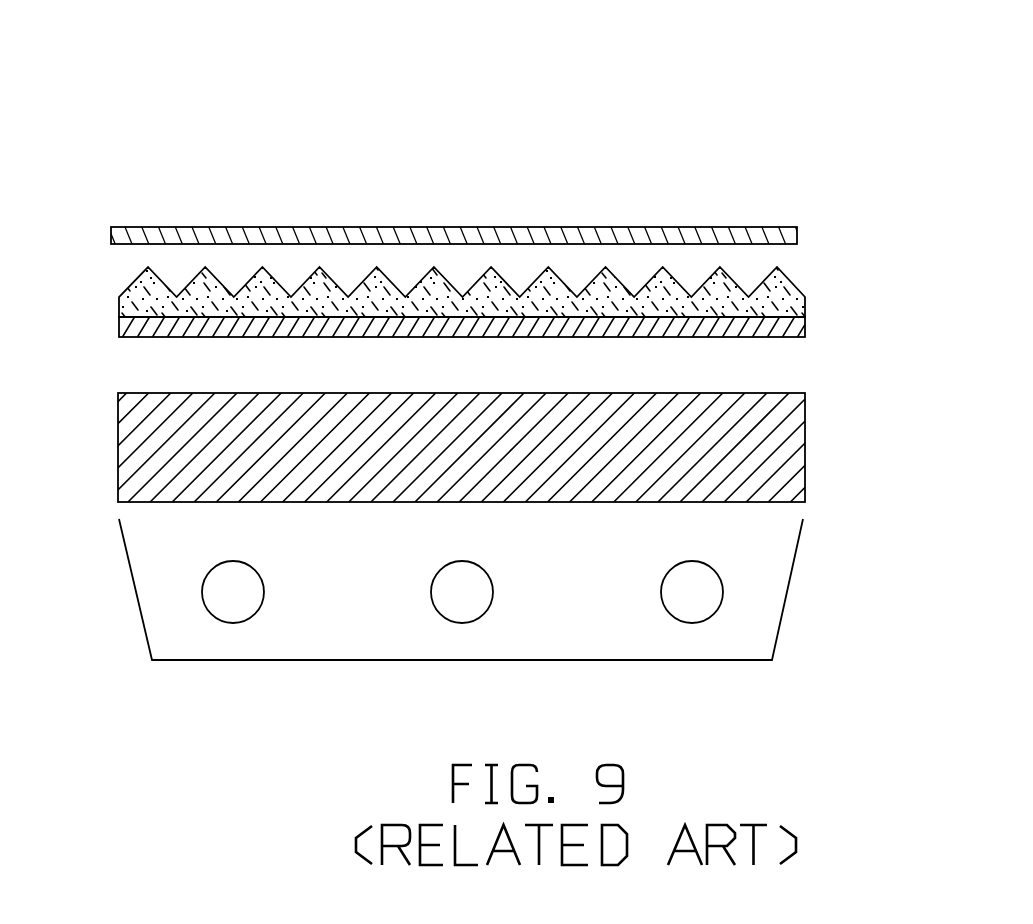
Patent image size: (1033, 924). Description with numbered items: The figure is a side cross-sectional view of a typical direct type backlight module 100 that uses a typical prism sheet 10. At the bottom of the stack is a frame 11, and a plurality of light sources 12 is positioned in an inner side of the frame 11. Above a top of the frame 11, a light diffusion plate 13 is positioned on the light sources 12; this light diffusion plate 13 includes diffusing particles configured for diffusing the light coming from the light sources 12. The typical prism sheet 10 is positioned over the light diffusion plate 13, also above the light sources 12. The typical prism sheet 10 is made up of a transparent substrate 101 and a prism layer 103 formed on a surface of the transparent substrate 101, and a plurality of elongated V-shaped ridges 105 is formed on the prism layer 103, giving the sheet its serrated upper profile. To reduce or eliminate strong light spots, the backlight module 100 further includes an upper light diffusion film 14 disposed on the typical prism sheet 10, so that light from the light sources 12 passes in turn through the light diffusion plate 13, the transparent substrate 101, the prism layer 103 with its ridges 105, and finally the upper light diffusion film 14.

The direct type backlight module 100 is at (379, 64).
The upper light diffusion film 14 is at (795, 235).
The typical prism sheet 10 is at (487, 300).
The prism layer 103 is at (466, 288).
The elongated V-shaped ridges 105 is at (141, 279).
The transparent substrate 101 is at (800, 331).
The light diffusion plate 13 is at (805, 447).
The light sources 12 is at (700, 582).
The frame 11 is at (510, 589).